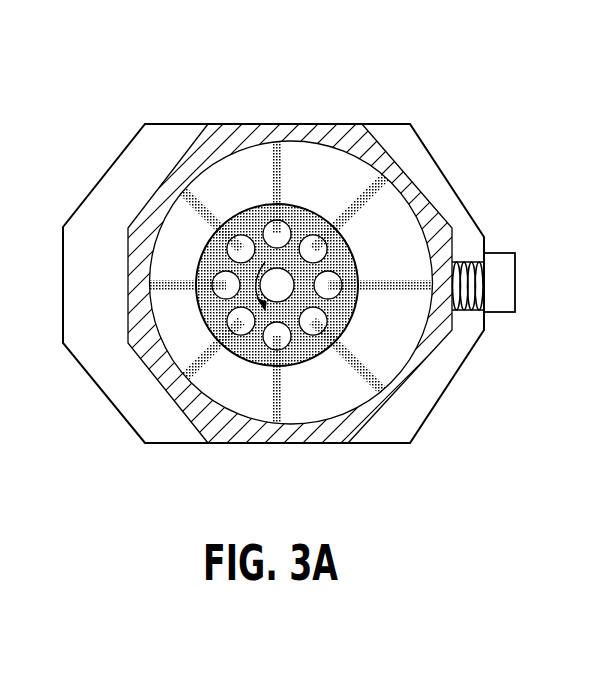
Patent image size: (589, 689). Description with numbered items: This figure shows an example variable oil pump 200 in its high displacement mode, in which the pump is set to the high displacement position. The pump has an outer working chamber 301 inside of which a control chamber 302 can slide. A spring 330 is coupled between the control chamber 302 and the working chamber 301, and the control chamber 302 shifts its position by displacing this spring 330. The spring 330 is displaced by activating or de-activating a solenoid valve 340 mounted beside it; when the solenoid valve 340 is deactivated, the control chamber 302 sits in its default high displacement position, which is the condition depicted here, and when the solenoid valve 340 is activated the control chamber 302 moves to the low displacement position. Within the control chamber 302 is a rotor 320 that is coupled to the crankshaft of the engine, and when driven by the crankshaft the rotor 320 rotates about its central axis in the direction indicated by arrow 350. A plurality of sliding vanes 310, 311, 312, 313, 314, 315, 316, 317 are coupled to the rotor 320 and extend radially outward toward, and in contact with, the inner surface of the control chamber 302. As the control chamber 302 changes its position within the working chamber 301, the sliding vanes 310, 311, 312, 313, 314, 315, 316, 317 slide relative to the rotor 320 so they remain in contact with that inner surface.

The variable oil pump 200 is at (446, 66).
The working chamber 301 is at (173, 123).
The control chamber 302 is at (430, 217).
The sliding vane 310 is at (270, 163).
The sliding vane 311 is at (172, 208).
The sliding vane 312 is at (410, 197).
The sliding vane 313 is at (390, 285).
The sliding vane 314 is at (370, 373).
The sliding vane 315 is at (283, 378).
The sliding vane 316 is at (200, 365).
The sliding vane 317 is at (172, 298).
The rotor 320 is at (217, 267).
The spring 330 is at (468, 308).
The solenoid valve 340 is at (498, 276).
The arrow 350 is at (248, 252).